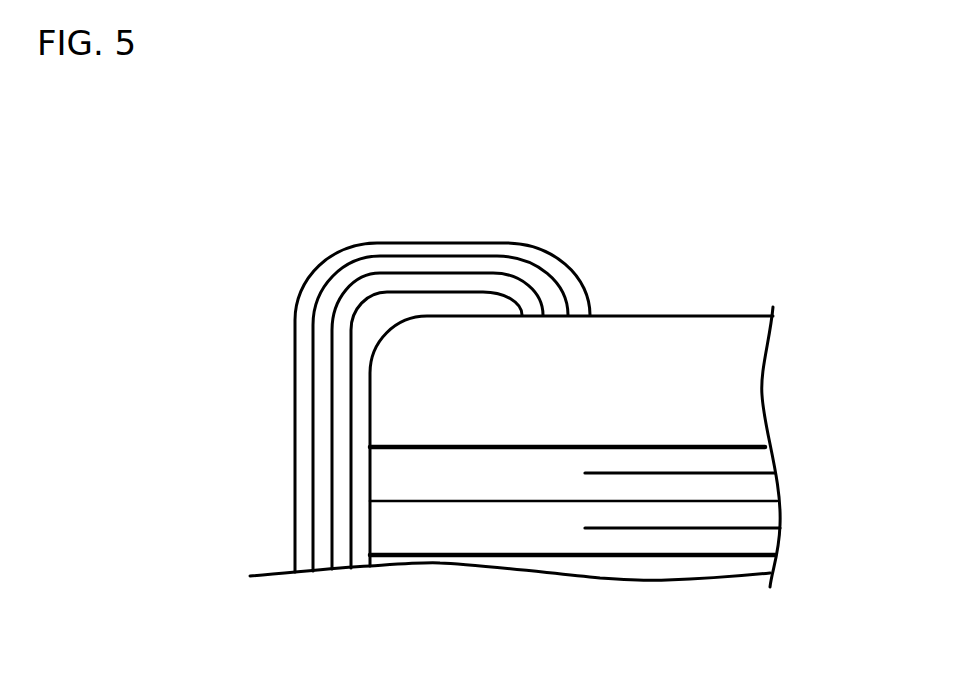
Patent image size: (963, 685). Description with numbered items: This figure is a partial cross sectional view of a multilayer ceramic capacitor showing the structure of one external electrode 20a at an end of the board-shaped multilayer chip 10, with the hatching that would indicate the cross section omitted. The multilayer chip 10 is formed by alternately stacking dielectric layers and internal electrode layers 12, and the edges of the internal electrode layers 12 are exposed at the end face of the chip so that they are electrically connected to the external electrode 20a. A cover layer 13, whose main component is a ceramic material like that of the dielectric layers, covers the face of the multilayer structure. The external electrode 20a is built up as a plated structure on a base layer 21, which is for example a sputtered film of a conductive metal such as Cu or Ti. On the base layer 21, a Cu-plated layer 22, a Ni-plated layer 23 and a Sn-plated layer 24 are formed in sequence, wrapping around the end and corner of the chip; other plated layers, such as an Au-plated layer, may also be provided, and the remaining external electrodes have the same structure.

The multilayer chip 10 is at (752, 305).
The internal electrode layer 12 is at (525, 555).
The cover layer 13 is at (690, 357).
The external electrode 20a is at (133, 183).
The base layer 21 is at (360, 468).
The Cu-plated layer 22 is at (343, 402).
The Ni-plated layer 23 is at (322, 345).
The Sn-plated layer 24 is at (316, 298).